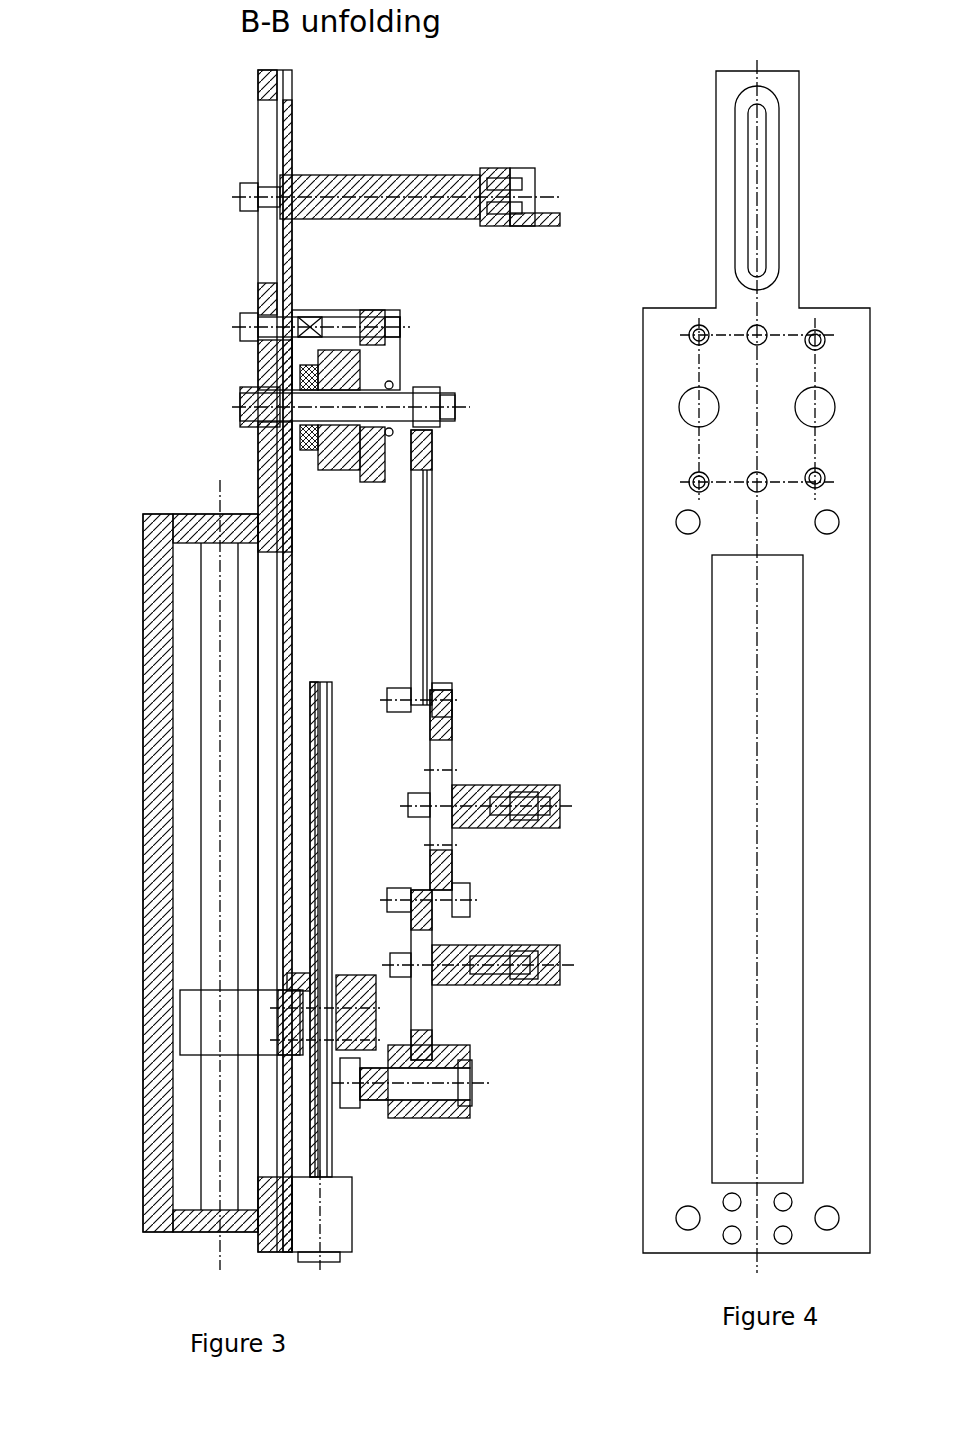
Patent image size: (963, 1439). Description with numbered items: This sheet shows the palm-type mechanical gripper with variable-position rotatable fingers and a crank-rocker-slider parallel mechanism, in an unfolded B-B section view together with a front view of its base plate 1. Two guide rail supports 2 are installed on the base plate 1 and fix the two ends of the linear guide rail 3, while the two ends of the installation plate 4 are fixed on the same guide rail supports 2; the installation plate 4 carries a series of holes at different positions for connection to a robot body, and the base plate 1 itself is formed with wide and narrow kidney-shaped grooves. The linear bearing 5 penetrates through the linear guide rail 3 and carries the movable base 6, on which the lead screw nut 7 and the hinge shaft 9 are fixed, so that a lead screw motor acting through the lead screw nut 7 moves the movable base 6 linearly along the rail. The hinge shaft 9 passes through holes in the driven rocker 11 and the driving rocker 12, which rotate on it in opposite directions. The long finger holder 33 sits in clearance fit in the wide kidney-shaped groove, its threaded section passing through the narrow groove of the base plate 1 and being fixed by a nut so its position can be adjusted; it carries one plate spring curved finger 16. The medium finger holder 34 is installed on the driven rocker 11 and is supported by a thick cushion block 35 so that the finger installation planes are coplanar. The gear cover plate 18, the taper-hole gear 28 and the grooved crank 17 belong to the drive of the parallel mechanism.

In FIG. 3, the base plate 1 is at (262, 1240).
In FIG. 4, the base plate 1 is at (685, 1160).
In FIG. 3, the guide rail support 2 is at (200, 1222).
In FIG. 3, the linear guide rail 3 is at (215, 1140).
In FIG. 3, the installation plate 4 is at (150, 1080).
In FIG. 3, the linear bearing 5 is at (213, 1030).
In FIG. 3, the movable base 6 is at (273, 1003).
In FIG. 3, the lead screw nut 7 is at (287, 990).
In FIG. 3, the hinge shaft 9 is at (465, 1085).
In FIG. 3, the driven rocker 11 is at (420, 1037).
In FIG. 3, the driving rocker 12 is at (440, 1062).
In FIG. 3, the plate spring curved finger 16 is at (535, 226).
In FIG. 3, the grooved crank 17 is at (428, 580).
In FIG. 3, the gear cover plate 18 is at (375, 448).
In FIG. 3, the taper-hole gear 28 is at (385, 480).
In FIG. 3, the long finger holder 33 is at (375, 200).
In FIG. 3, the medium finger holder 34 is at (480, 785).
In FIG. 3, the thick cushion block 35 is at (500, 945).